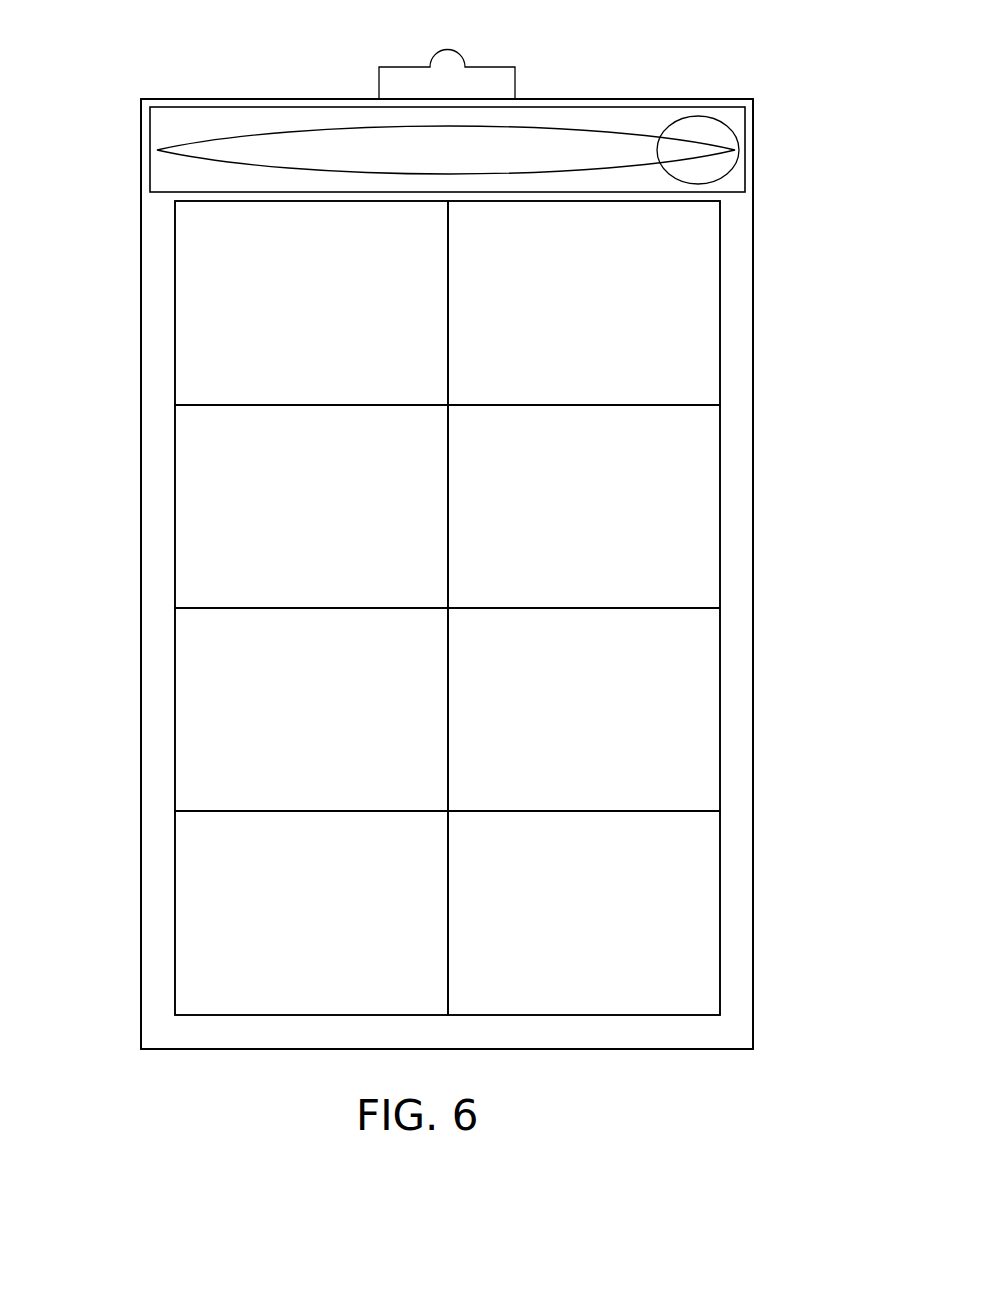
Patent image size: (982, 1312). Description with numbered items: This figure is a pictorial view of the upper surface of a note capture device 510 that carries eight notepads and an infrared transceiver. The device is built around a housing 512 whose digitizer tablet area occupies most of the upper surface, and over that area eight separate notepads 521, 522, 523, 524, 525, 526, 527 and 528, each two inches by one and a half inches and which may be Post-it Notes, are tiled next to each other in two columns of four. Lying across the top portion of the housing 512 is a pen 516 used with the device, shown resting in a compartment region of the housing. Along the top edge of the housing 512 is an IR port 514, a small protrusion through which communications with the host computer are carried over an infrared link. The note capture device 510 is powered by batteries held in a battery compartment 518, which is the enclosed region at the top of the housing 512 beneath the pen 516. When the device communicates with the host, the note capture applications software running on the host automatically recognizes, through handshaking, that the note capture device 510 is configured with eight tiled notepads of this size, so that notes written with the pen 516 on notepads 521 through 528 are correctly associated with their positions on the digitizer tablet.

The note capture device 510 is at (133, 65).
The housing 512 is at (140, 260).
The IR port 514 is at (423, 67).
The pen 516 is at (328, 133).
The battery compartment 518 is at (628, 100).
The notepad 521 is at (183, 363).
The notepad 522 is at (183, 481).
The notepad 523 is at (183, 768).
The notepad 524 is at (183, 887).
The notepad 525 is at (710, 363).
The notepad 526 is at (710, 483).
The notepad 527 is at (710, 768).
The notepad 528 is at (710, 888).